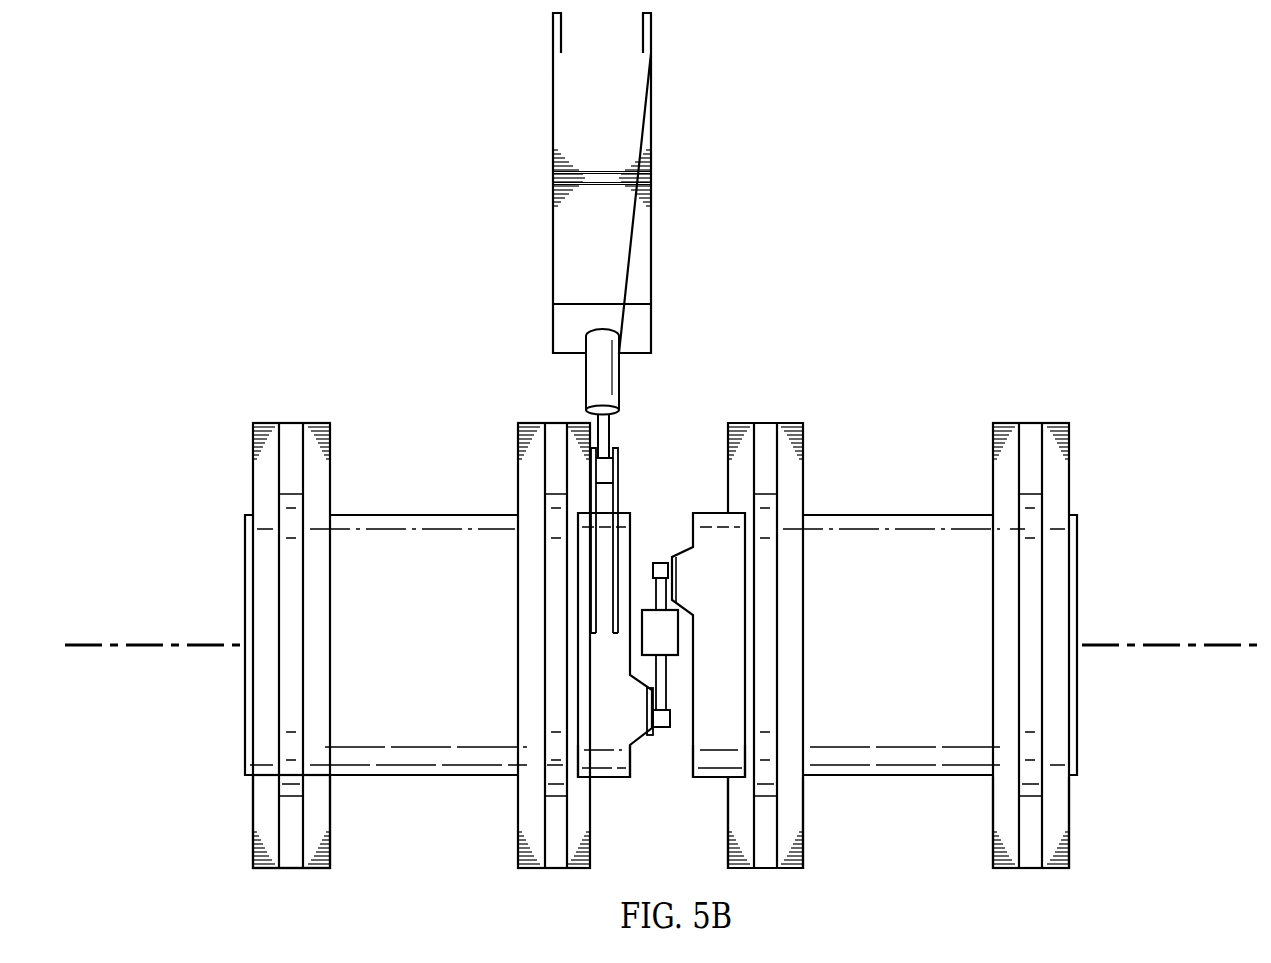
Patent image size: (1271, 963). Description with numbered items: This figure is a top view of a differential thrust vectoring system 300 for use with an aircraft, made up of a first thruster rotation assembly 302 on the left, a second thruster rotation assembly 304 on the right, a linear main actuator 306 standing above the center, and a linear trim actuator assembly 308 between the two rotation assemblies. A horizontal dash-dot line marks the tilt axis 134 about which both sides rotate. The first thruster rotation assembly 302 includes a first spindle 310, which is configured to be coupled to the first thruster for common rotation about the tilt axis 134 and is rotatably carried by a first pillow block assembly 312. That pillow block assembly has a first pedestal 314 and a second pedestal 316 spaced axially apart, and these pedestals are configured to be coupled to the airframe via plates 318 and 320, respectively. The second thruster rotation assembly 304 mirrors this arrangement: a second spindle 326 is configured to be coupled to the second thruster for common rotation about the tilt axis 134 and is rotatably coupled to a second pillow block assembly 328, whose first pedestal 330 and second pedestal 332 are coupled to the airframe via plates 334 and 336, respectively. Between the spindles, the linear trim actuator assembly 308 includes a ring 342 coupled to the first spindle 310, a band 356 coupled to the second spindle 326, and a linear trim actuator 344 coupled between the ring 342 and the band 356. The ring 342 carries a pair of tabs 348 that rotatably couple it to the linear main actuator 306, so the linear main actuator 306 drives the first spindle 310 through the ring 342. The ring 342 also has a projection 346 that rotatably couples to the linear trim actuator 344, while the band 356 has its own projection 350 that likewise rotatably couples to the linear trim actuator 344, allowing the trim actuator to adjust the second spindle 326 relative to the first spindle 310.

The differential thrust vectoring system 300 is at (199, 68).
The tilt axis 134 is at (83, 645).
The first thruster rotation assembly 302 is at (360, 616).
The second thruster rotation assembly 304 is at (975, 616).
The linear main actuator 306 is at (553, 106).
The linear trim actuator assembly 308 is at (702, 503).
The first spindle 310 is at (409, 515).
The first pillow block assembly 312 is at (264, 413).
The first pedestal 314 is at (555, 640).
The second pedestal 316 is at (297, 687).
The plate 318 is at (517, 827).
The plate 320 is at (255, 826).
The second spindle 326 is at (920, 515).
The second pillow block assembly 328 is at (1044, 412).
The first pedestal 330 is at (768, 694).
The second pedestal 332 is at (1027, 677).
The plate 334 is at (803, 810).
The plate 336 is at (1070, 830).
The ring 342 is at (613, 779).
The linear trim actuator 344 is at (665, 629).
The projection 346 is at (650, 706).
The tabs 348 is at (620, 473).
The projection 350 is at (672, 580).
The band 356 is at (710, 779).